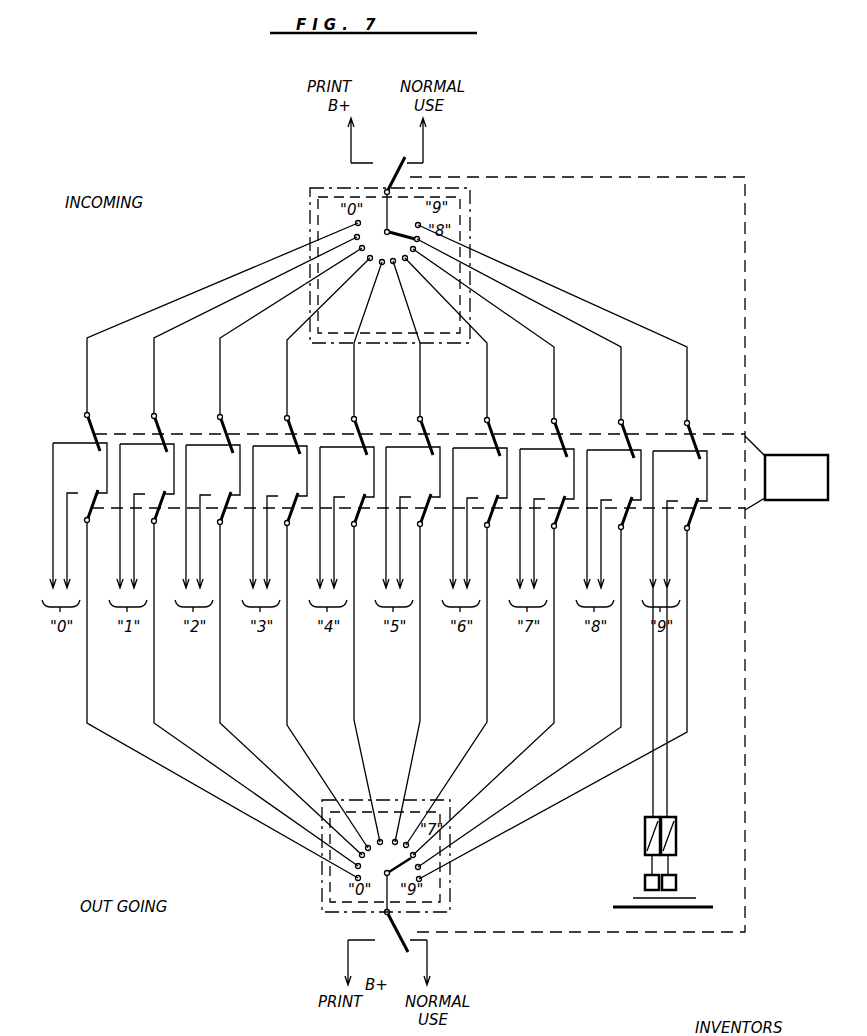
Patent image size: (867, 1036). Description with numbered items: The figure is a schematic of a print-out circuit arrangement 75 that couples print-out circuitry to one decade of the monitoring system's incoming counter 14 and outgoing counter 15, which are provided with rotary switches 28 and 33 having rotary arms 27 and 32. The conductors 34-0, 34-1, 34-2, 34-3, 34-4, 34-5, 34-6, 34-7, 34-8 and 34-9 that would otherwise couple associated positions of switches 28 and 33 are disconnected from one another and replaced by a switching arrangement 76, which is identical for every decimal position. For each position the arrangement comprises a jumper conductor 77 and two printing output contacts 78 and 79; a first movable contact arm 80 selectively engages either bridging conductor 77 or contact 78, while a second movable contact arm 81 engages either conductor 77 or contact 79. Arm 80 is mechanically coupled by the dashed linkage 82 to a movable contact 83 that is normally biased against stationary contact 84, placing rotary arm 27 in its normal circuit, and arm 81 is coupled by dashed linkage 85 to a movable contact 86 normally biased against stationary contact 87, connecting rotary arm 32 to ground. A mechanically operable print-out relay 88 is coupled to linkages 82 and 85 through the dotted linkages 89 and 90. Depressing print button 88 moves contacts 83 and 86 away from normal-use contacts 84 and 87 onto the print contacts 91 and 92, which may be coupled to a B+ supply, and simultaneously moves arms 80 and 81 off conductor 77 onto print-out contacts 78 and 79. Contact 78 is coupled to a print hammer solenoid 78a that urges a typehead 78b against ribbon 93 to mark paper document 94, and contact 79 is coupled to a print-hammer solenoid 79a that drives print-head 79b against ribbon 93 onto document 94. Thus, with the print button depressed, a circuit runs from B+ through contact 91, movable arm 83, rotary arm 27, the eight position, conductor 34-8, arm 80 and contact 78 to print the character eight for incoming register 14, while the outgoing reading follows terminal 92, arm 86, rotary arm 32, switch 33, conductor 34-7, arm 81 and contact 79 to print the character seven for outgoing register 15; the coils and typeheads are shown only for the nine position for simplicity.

The incoming counter 14 is at (470, 233).
The outgoing counter 15 is at (322, 868).
The rotary arm 27 is at (392, 229).
The rotary switch 28 is at (318, 212).
The rotary arm 32 is at (401, 857).
The rotary switch 33 is at (330, 893).
The conductor 34-0 is at (87, 361).
The conductor 34-1 is at (154, 361).
The conductor 34-2 is at (220, 361).
The conductor 34-3 is at (287, 361).
The conductor 34-4 is at (354, 361).
The conductor 34-5 is at (420, 361).
The conductor 34-6 is at (487, 361).
The conductor 34-7 is at (554, 361).
The conductor 34-8 is at (621, 361).
The conductor 34-9 is at (687, 361).
The print-out circuit arrangement 75 is at (640, 133).
The switching arrangement 76 is at (46, 481).
The jumper conductor 77 is at (380, 471).
The printing output contact 78 is at (52, 542).
The printing output contact 79 is at (66, 521).
The first movable contact arm 80 is at (405, 420).
The second movable contact arm 81 is at (692, 531).
The mechanical linkage 82 is at (747, 236).
The movable contact 83 is at (388, 167).
The stationary contact 84 is at (428, 143).
The mechanical linkage 85 is at (747, 612).
The movable contact 86 is at (385, 918).
The stationary contact 87 is at (430, 965).
The print-out relay 88 is at (806, 487).
The mechanical linkage 89 is at (758, 444).
The mechanical linkage 90 is at (750, 513).
The print contact 91 is at (350, 135).
The print contact 92 is at (346, 958).
The ribbon 93 is at (633, 897).
The paper document 94 is at (633, 908).
The print hammer solenoid 78a is at (644, 832).
The print-hammer solenoid 79a is at (678, 838).
The typehead 78b is at (645, 883).
The print-head 79b is at (678, 882).